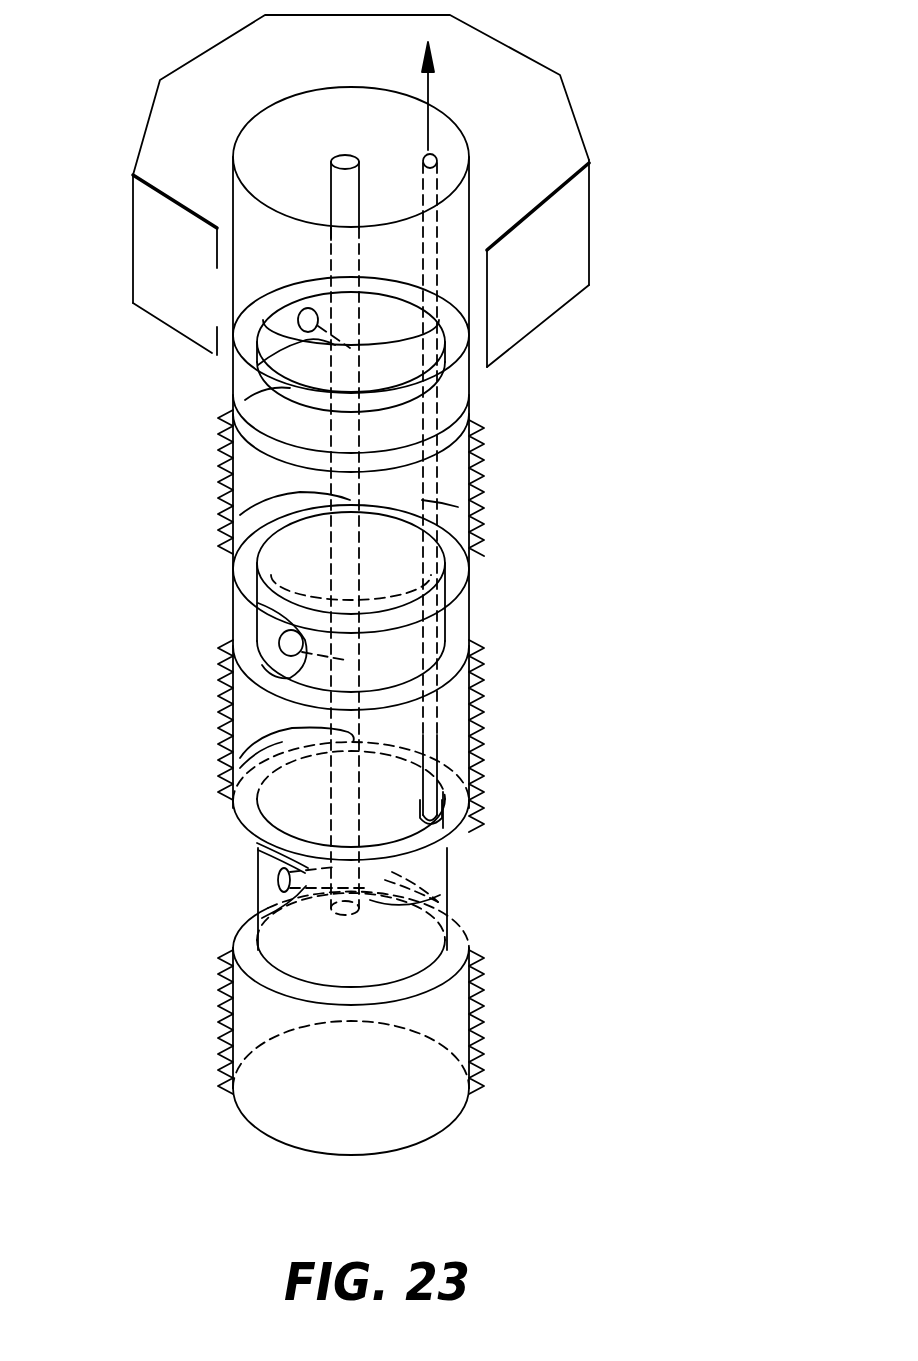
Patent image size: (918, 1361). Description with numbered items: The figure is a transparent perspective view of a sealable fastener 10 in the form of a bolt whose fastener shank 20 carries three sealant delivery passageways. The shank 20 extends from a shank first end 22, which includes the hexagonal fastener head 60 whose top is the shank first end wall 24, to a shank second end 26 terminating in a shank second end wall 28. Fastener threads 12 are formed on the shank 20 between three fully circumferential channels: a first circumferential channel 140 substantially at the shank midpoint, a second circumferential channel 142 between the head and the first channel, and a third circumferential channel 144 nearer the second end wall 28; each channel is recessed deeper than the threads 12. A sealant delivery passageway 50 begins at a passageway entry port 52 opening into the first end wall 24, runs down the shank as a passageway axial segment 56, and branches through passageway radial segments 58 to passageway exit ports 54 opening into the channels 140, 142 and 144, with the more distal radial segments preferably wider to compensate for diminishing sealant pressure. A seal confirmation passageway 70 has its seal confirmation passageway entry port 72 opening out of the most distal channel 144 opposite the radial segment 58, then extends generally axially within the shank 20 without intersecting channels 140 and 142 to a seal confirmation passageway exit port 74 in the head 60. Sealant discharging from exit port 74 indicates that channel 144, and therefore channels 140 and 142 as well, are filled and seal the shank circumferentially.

The sealable fastener 10 is at (638, 92).
The fastener threads 12 is at (486, 490).
The fastener shank 20 is at (485, 456).
The shank first end 22 is at (560, 250).
The shank first end wall 24 is at (166, 145).
The shank second end 26 is at (235, 1058).
The shank second end wall 28 is at (405, 1150).
The sealant delivery passageway 50 is at (265, 386).
The passageway entry port 52 is at (338, 152).
The passageway exit port 54 is at (262, 318).
The passageway axial segment 56 is at (340, 240).
The passageway radial segment 58 is at (297, 338).
The fastener head 60 is at (591, 222).
The seal confirmation passageway 70 is at (438, 272).
The seal confirmation passageway entry port 72 is at (442, 820).
The seal confirmation passageway exit port 74 is at (437, 152).
The first circumferential channel 140 is at (460, 395).
The second circumferential channel 142 is at (455, 612).
The third circumferential channel 144 is at (447, 878).